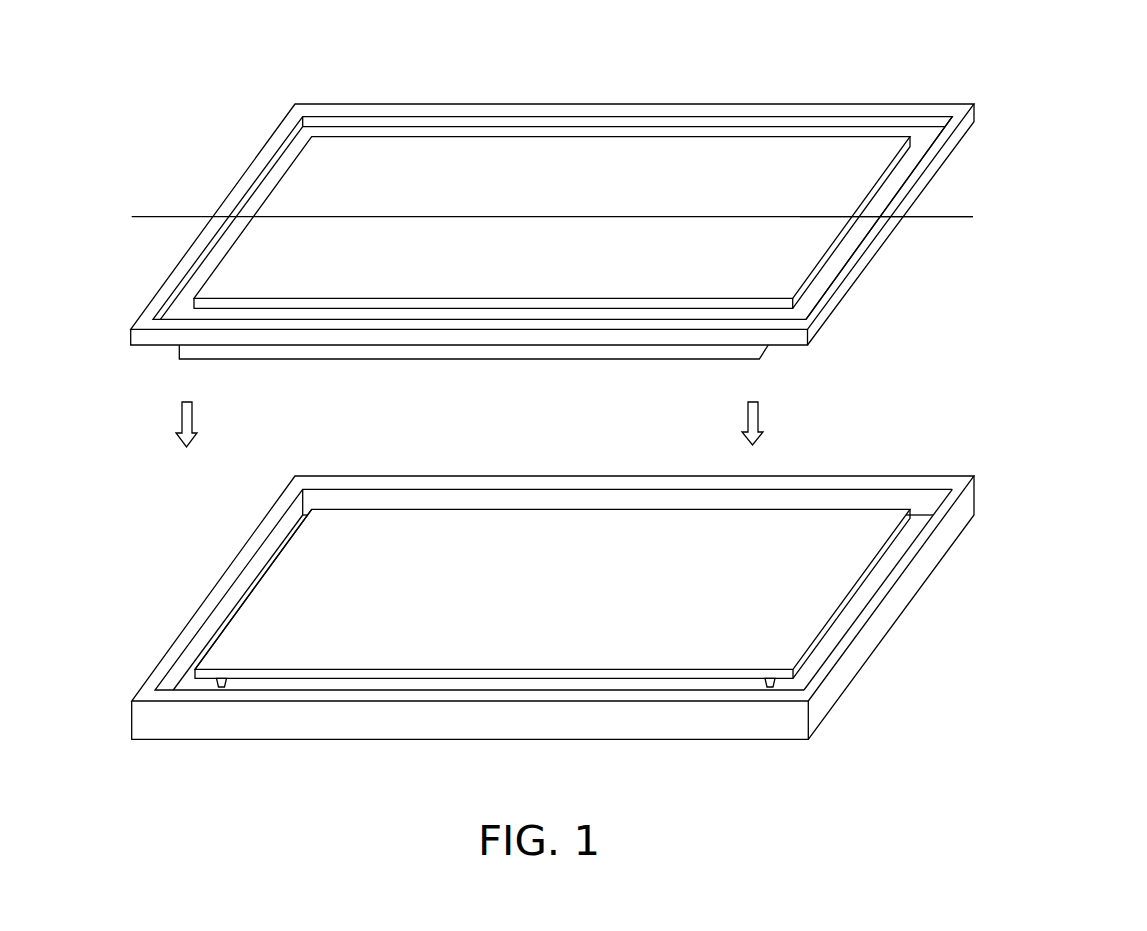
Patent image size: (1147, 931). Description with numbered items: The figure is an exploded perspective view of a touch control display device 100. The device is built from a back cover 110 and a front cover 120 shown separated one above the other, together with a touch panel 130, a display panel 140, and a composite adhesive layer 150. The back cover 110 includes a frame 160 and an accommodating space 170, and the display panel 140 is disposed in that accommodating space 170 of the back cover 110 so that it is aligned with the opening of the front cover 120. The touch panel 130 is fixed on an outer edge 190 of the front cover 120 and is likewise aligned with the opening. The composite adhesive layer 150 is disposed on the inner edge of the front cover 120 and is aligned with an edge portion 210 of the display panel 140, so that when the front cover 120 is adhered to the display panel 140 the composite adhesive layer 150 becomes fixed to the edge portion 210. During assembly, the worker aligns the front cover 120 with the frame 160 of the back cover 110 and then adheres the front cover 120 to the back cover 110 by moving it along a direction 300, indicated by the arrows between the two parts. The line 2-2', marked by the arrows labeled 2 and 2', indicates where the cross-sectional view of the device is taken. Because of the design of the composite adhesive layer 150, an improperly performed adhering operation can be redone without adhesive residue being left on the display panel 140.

The touch control display device 100 is at (92, 95).
The back cover 110 is at (981, 542).
The front cover 120 is at (1017, 132).
The touch panel 130 is at (395, 167).
The display panel 140 is at (420, 545).
The composite adhesive layer 150 is at (173, 352).
The frame 160 is at (957, 492).
The accommodating space 170 is at (254, 549).
The outer edge 190 is at (905, 168).
The edge portion 210 is at (247, 622).
The direction 300 is at (763, 423).
The line 2-2' 2 is at (530, 256).
The line 2- 2' is at (886, 255).